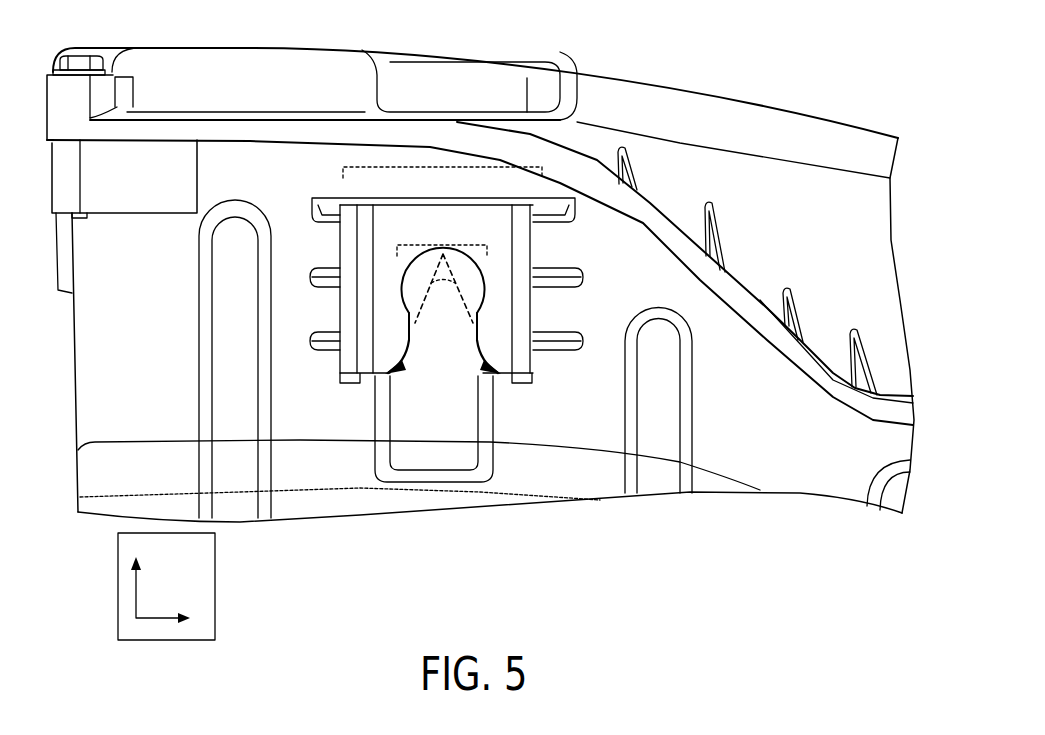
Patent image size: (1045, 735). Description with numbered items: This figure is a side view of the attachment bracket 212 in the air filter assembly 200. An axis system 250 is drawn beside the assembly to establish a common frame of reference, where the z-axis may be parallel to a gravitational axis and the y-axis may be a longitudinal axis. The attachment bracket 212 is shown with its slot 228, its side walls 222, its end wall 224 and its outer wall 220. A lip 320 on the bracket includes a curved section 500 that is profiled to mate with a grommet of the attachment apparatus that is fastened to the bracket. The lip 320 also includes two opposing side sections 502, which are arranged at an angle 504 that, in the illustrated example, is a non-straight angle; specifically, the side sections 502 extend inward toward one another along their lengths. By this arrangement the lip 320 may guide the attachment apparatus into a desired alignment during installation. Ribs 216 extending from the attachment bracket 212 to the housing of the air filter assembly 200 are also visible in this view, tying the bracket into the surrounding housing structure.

The air filter assembly 200 is at (820, 93).
The attachment bracket 212 is at (442, 167).
The ribs 216 is at (307, 342).
The outer wall 220 is at (503, 258).
The side walls 222 is at (347, 312).
The end wall 224 is at (432, 197).
The slot 228 is at (436, 388).
The axis system 250 is at (118, 593).
The lip 320 is at (388, 264).
The curved section 500 is at (443, 245).
The side sections 502 is at (400, 328).
The angle 504 is at (446, 270).